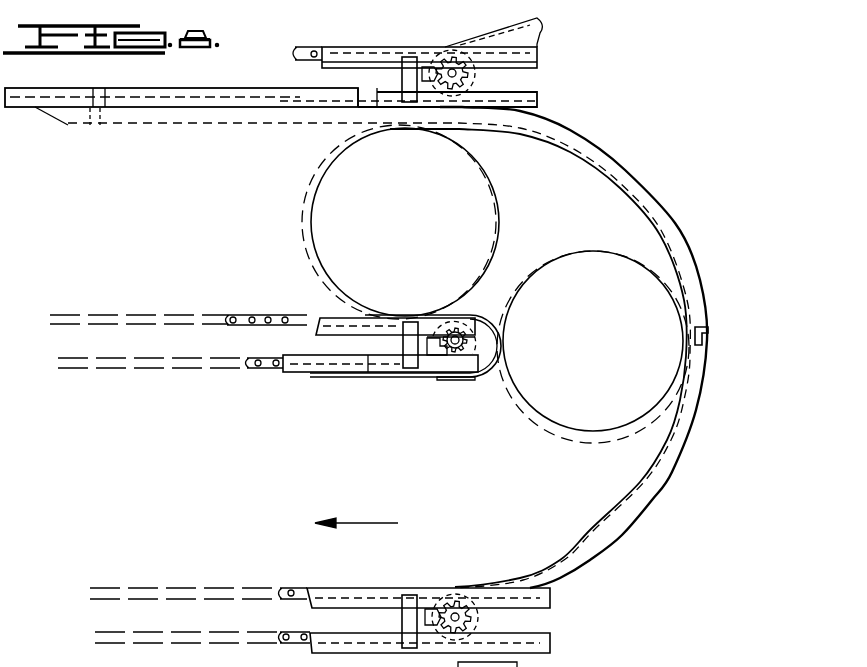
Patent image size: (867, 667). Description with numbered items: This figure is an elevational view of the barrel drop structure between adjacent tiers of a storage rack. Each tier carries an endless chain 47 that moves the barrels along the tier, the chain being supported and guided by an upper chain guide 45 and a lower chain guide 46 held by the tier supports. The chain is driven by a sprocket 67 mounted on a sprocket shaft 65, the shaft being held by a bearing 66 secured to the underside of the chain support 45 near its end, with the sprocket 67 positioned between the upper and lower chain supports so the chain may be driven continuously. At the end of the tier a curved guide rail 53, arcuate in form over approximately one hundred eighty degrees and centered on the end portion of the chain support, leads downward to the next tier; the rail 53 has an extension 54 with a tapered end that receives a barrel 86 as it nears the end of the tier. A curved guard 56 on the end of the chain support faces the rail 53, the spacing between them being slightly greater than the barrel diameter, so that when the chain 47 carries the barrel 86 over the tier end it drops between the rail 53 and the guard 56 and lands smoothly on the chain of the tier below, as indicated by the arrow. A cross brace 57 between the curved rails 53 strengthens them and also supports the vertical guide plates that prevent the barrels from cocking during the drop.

The extension 54 is at (200, 118).
The sprocket 67 is at (470, 74).
The curved guide rail 53 is at (670, 471).
The barrel 86 is at (486, 212).
The cross brace 57 is at (718, 326).
The endless chain 47 is at (266, 317).
The upper chain guide 45 is at (337, 328).
The lower chain guide 46 is at (553, 646).
The curved guard 56 is at (483, 374).
The sprocket shaft 65 is at (456, 352).
The bearing 66 is at (447, 348).